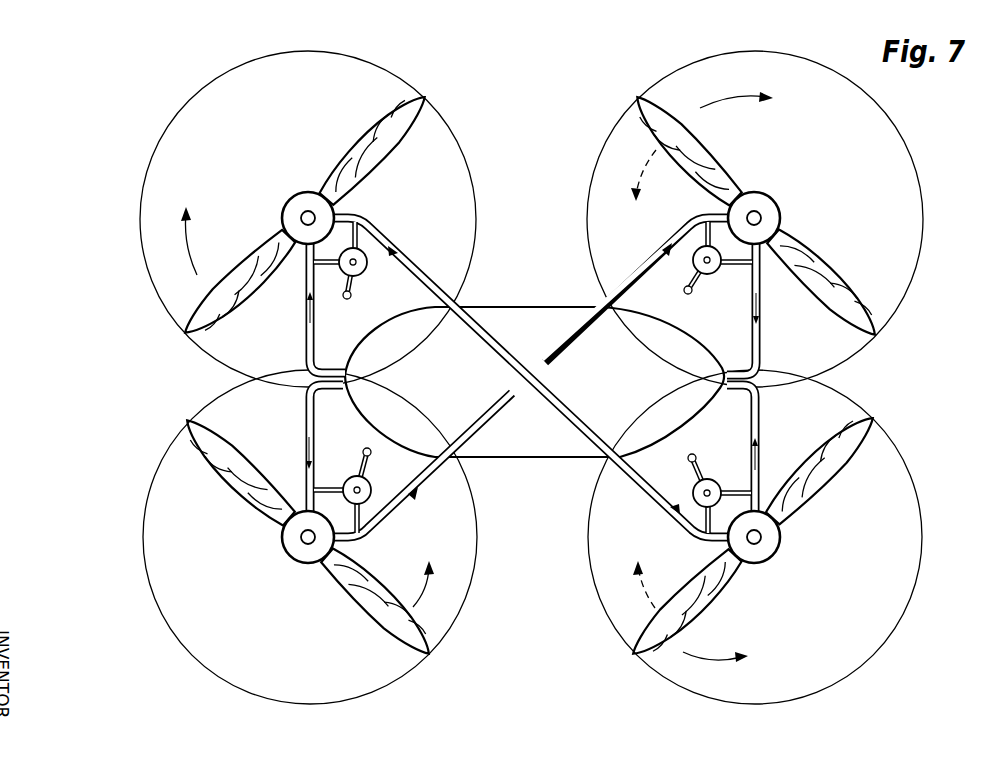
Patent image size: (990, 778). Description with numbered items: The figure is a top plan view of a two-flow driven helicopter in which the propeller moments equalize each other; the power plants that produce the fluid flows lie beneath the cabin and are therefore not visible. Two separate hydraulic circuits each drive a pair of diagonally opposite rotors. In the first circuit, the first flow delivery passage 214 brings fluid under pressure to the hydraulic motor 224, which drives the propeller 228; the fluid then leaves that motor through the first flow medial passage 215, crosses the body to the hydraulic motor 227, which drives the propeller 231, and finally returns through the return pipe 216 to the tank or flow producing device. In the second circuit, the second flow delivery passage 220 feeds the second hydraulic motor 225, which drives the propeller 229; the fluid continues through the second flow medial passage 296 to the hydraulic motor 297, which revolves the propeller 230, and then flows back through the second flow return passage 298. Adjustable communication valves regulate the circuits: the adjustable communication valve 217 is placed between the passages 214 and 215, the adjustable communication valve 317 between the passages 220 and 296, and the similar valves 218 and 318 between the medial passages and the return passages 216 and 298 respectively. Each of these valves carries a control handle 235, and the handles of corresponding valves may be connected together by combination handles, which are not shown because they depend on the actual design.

The first flow delivery passage 214 is at (305, 337).
The first flow medial passage 215 is at (433, 280).
The return pipe 216 is at (759, 399).
The adjustable communication valve 217 is at (367, 265).
The adjustable communication valve 218 is at (712, 483).
The second flow delivery passage 220 is at (305, 419).
The hydraulic motor 224 is at (300, 205).
The second hydraulic motor 225 is at (298, 548).
The hydraulic motor 227 is at (781, 537).
The propeller 228 is at (374, 141).
The propeller 229 is at (240, 485).
The propeller 230 is at (711, 161).
The propeller 231 is at (827, 478).
The control handle 235 is at (351, 298).
The second flow medial passage 296 is at (690, 222).
The hydraulic motor 297 is at (771, 212).
The second flow return passage 298 is at (761, 347).
The adjustable communication valve 317 is at (350, 480).
The adjustable communication valve 318 is at (710, 275).